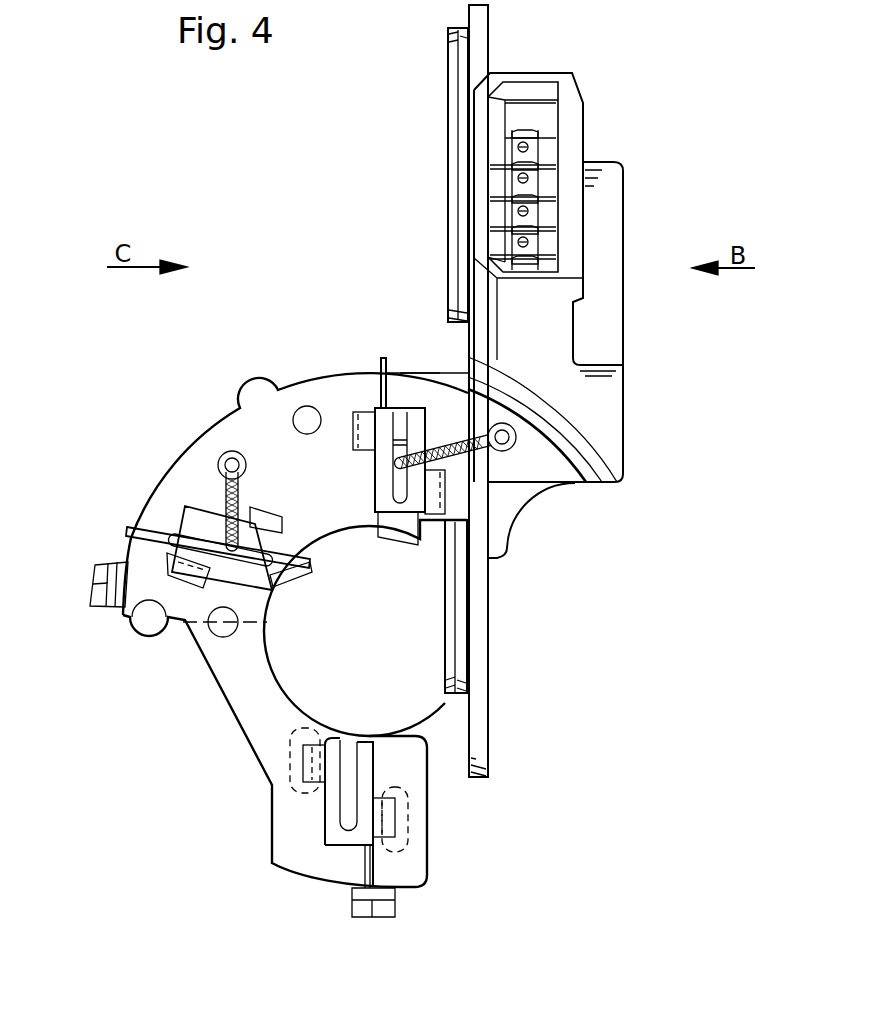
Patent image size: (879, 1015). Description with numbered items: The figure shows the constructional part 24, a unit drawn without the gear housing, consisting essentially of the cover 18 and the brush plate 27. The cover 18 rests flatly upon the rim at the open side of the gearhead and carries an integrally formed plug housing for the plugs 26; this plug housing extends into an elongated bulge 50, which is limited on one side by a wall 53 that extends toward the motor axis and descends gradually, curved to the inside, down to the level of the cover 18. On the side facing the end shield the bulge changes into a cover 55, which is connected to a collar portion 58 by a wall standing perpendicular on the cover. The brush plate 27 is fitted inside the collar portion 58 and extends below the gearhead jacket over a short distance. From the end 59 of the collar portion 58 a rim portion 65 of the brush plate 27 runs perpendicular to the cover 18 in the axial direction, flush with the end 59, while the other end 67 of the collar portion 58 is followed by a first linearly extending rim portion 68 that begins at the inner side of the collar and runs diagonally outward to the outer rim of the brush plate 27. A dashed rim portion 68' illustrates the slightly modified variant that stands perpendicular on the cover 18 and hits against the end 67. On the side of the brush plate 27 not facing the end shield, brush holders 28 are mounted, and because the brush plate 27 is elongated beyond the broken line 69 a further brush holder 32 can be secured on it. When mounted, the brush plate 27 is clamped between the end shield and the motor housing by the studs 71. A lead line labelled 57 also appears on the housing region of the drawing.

The cover 18 is at (473, 755).
The constructional part 24 is at (624, 396).
The plugs 26 is at (538, 131).
The brush plate 27 is at (193, 465).
The brush holders 28 is at (382, 490).
The brush holder 32 is at (367, 773).
The elongated bulge 50 is at (613, 253).
The wall 53 is at (518, 518).
The cover 55 is at (624, 448).
The recess 57 is at (552, 382).
The collar portion 58 is at (620, 486).
The end of the collar portion 59 is at (602, 470).
The rim portion 65 is at (563, 484).
The other end of the collar portion 67 is at (468, 362).
The first linearly extending rim portion 68 is at (368, 361).
The rim portion 68' is at (409, 322).
The broken line 69 is at (157, 620).
The studs 71 is at (93, 565).